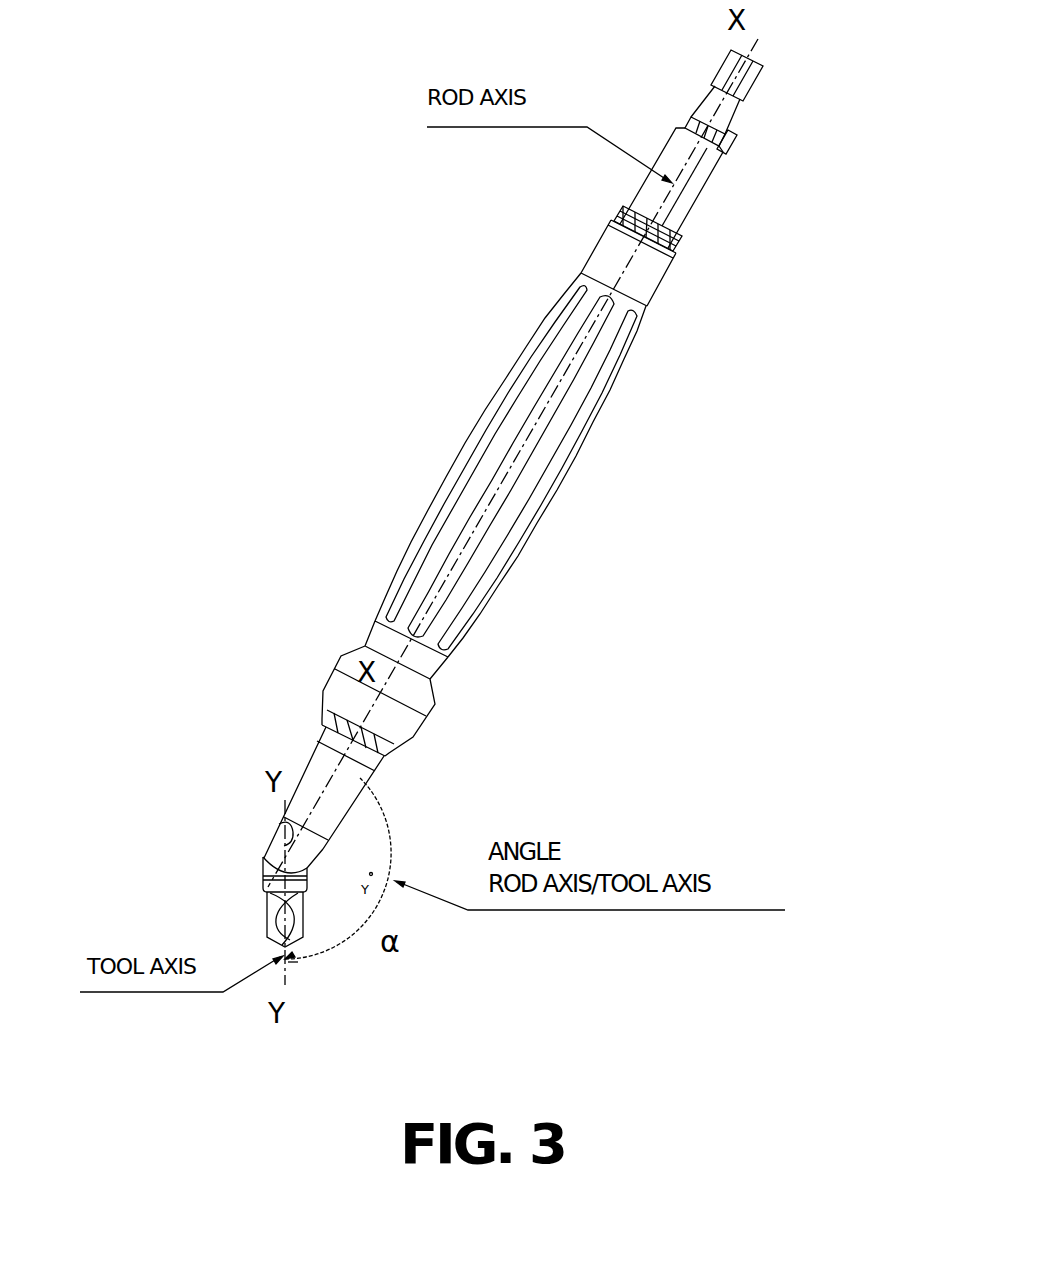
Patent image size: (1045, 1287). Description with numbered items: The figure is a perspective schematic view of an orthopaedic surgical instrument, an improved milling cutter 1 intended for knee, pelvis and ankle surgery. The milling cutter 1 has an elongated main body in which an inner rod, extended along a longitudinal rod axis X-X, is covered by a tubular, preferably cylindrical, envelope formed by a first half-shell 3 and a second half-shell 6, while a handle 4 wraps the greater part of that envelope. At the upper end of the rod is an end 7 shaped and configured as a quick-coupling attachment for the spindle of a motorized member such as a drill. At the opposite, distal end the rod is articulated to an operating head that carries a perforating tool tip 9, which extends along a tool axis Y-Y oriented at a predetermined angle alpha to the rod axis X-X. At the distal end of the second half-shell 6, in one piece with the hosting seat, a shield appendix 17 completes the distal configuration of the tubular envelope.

The milling cutter 1 is at (350, 358).
The first half-shell 3 is at (637, 190).
The handle 4 is at (550, 417).
The second half-shell 6 is at (683, 190).
The end of the inner rod 7 is at (722, 103).
The perforating tool tip 9 is at (272, 917).
The shield appendix 17 is at (266, 850).